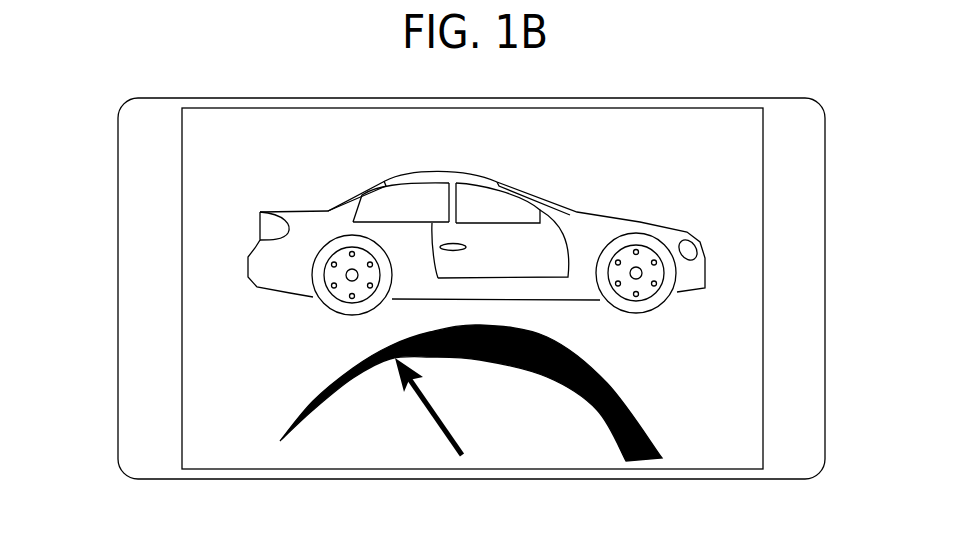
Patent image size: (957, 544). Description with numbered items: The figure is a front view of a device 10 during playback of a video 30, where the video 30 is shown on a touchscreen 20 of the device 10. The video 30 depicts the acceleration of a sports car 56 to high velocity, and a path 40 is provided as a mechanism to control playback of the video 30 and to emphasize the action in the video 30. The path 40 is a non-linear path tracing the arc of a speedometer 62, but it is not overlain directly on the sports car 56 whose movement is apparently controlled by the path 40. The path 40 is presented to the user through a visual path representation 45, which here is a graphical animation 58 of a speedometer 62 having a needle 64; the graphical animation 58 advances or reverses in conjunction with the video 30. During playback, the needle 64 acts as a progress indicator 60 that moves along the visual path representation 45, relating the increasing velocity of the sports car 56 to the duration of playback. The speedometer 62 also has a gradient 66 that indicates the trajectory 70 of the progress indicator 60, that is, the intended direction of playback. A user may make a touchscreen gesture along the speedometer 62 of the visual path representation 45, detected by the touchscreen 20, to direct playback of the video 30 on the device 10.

The device 10 is at (86, 146).
The touchscreen 20 is at (657, 140).
The video 30 is at (228, 143).
The sports car 56 is at (488, 150).
The graphical animation 58 is at (318, 404).
The progress indicator 60 is at (360, 377).
The speedometer 62 is at (268, 417).
The needle 64 is at (392, 358).
The visual path representation 45 is at (438, 358).
The gradient 66 is at (480, 360).
The trajectory 70 is at (497, 360).
The path 40 is at (548, 363).